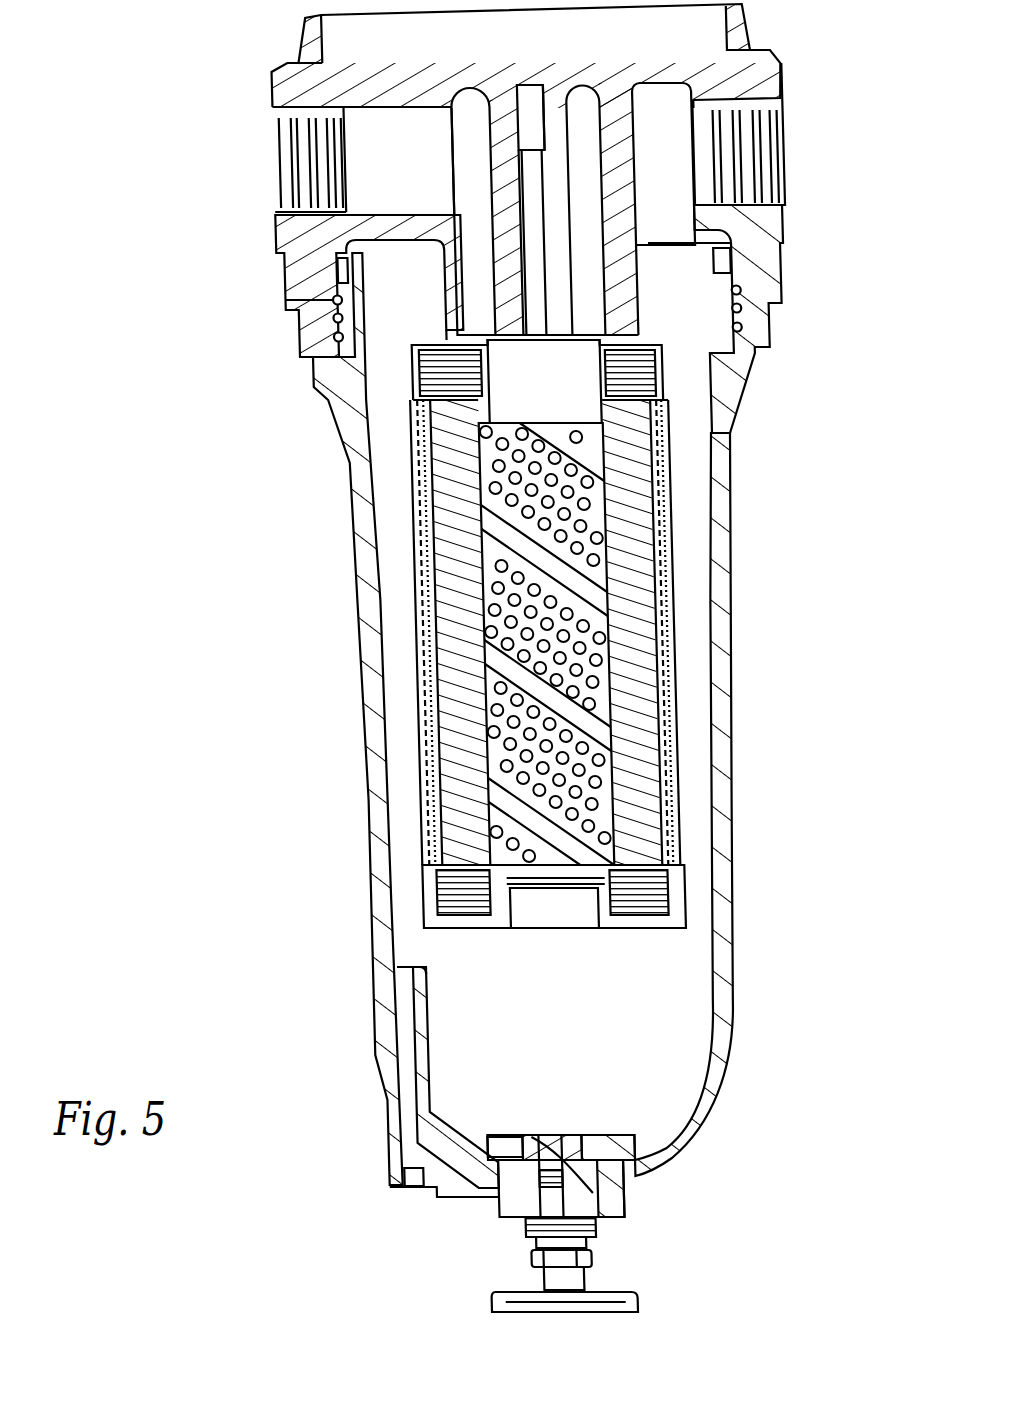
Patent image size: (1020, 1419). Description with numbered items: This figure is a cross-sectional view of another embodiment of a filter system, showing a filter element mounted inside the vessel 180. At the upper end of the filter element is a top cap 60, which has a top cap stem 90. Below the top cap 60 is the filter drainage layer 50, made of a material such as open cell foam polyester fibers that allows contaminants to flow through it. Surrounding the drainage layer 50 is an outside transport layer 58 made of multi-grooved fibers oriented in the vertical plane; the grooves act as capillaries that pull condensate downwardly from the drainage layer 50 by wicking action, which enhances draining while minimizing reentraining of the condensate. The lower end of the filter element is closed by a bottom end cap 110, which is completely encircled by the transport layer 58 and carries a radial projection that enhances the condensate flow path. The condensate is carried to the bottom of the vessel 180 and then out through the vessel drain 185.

The top cap stem 90 is at (660, 303).
The top cap 60 is at (658, 382).
The transport layer 58 is at (677, 653).
The filter drainage layer 50 is at (667, 710).
The bottom end cap 110 is at (677, 880).
The vessel 180 is at (703, 1087).
The vessel drain 185 is at (593, 1266).